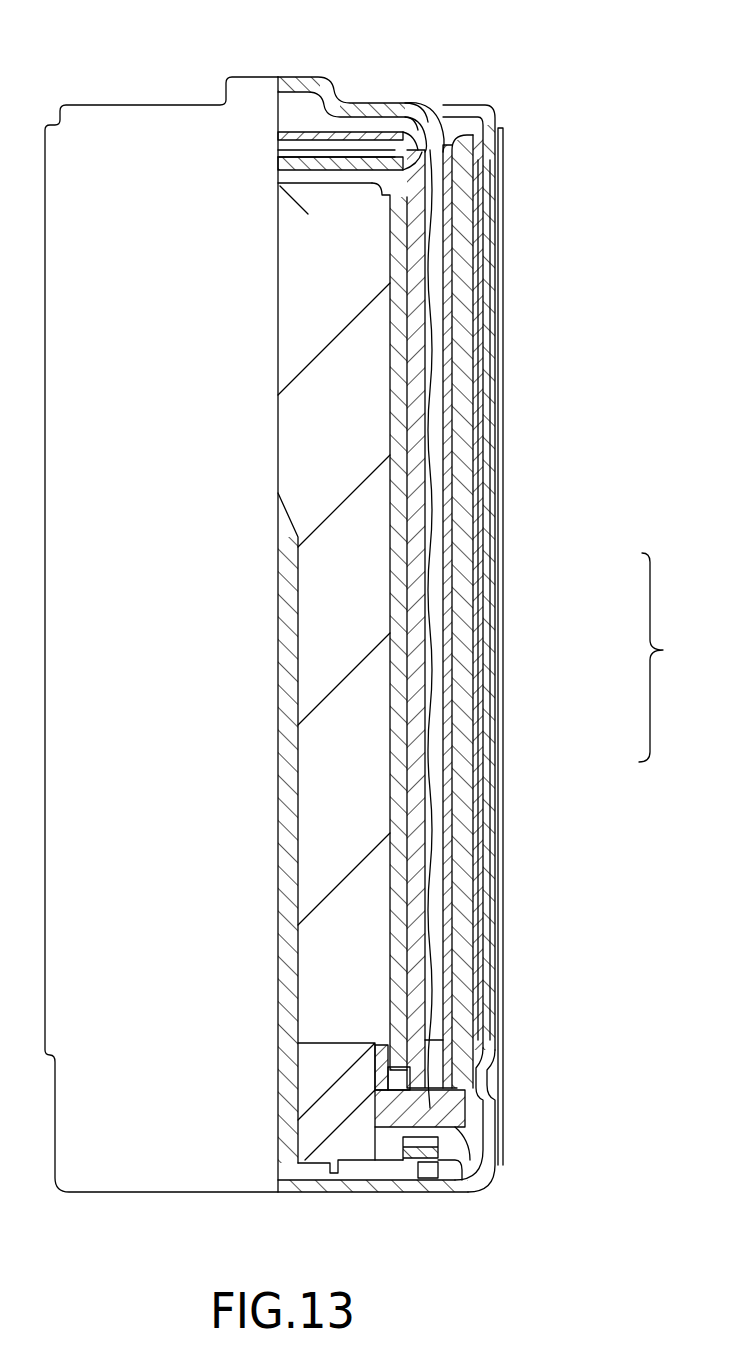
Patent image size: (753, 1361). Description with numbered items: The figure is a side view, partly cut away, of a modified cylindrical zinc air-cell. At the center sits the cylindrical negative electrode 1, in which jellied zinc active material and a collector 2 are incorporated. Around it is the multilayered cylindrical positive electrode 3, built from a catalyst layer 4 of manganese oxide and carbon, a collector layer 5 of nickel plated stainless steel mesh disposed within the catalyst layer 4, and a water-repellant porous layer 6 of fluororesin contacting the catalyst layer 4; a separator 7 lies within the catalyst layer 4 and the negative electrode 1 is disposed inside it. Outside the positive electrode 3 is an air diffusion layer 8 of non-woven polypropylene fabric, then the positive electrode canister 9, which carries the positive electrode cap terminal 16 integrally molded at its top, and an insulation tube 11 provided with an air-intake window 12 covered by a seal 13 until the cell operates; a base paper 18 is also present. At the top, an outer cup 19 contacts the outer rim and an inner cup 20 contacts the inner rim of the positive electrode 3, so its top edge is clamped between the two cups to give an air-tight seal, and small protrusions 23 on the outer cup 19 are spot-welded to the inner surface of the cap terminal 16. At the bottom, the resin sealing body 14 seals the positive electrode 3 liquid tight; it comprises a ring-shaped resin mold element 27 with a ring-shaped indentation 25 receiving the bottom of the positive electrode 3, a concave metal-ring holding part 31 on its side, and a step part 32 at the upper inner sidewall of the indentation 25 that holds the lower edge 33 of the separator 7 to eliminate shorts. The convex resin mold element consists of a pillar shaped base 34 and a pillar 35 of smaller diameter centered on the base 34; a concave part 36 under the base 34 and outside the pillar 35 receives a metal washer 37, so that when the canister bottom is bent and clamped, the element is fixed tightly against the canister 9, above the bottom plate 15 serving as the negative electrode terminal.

The cylindrical negative electrode 1 is at (380, 950).
The collector 2 is at (293, 1162).
The multilayered cylindrical positive electrode 3 is at (548, 621).
The catalyst layer 4 is at (483, 675).
The collector layer 5 is at (480, 743).
The water-repellant porous layer 6 is at (487, 628).
The separator 7 is at (405, 855).
The air diffusion layer 8 is at (490, 515).
The positive electrode canister 9 is at (500, 452).
The insulation tube 11 is at (493, 365).
The air-intake window 12 is at (487, 221).
The seal 13 is at (500, 283).
The resin sealing body 14 is at (370, 1178).
The bottom plate 15 is at (313, 1193).
The positive electrode cap terminal 16 is at (320, 77).
The base paper 18 is at (320, 178).
The outer cup 19 is at (445, 110).
The inner cup 20 is at (377, 128).
The small protrusions 23 is at (430, 108).
The ring-shaped indentation 25 is at (330, 1110).
The ring-shaped resin mold element 27 is at (452, 1112).
The concave metal-ring holding part 31 is at (370, 1085).
The step part 32 is at (380, 1057).
The lower edge 33 is at (428, 1036).
The pillar shaped base 34 is at (477, 1180).
The pillar 35 is at (300, 1063).
The concave part 36 is at (447, 1183).
The metal washer 37 is at (433, 1183).